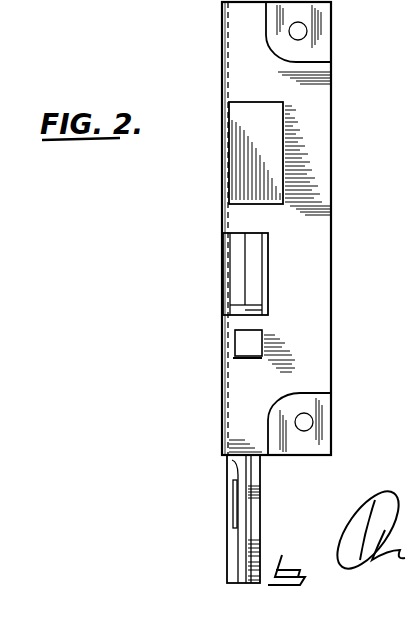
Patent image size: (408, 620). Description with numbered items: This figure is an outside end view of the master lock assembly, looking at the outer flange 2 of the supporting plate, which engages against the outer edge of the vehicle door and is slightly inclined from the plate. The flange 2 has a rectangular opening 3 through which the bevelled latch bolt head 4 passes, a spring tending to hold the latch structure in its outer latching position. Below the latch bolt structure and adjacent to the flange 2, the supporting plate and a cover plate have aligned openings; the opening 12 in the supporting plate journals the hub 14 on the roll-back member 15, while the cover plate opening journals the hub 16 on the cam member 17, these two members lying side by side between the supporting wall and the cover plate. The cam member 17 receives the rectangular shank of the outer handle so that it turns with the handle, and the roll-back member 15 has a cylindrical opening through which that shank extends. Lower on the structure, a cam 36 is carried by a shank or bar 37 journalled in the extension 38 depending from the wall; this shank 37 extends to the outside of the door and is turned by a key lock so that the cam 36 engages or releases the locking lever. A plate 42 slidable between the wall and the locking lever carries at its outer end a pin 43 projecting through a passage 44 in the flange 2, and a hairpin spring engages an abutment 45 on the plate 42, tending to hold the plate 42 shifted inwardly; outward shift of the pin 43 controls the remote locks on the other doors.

The outer flange 2 is at (317, 192).
The rectangular opening 3 is at (232, 153).
The bevelled latch bolt head 4 is at (268, 119).
The opening 12 is at (222, 242).
The hub 14 is at (230, 268).
The roll-back member 15 is at (238, 300).
The hub 16 is at (262, 273).
The cam member 17 is at (250, 296).
The cam 36 is at (254, 542).
The shank 37 is at (256, 503).
The extension 38 is at (228, 510).
The plate 42 is at (180, 0).
The pin 43 is at (238, 342).
The passage 44 is at (262, 330).
The abutment 45 is at (335, 5).